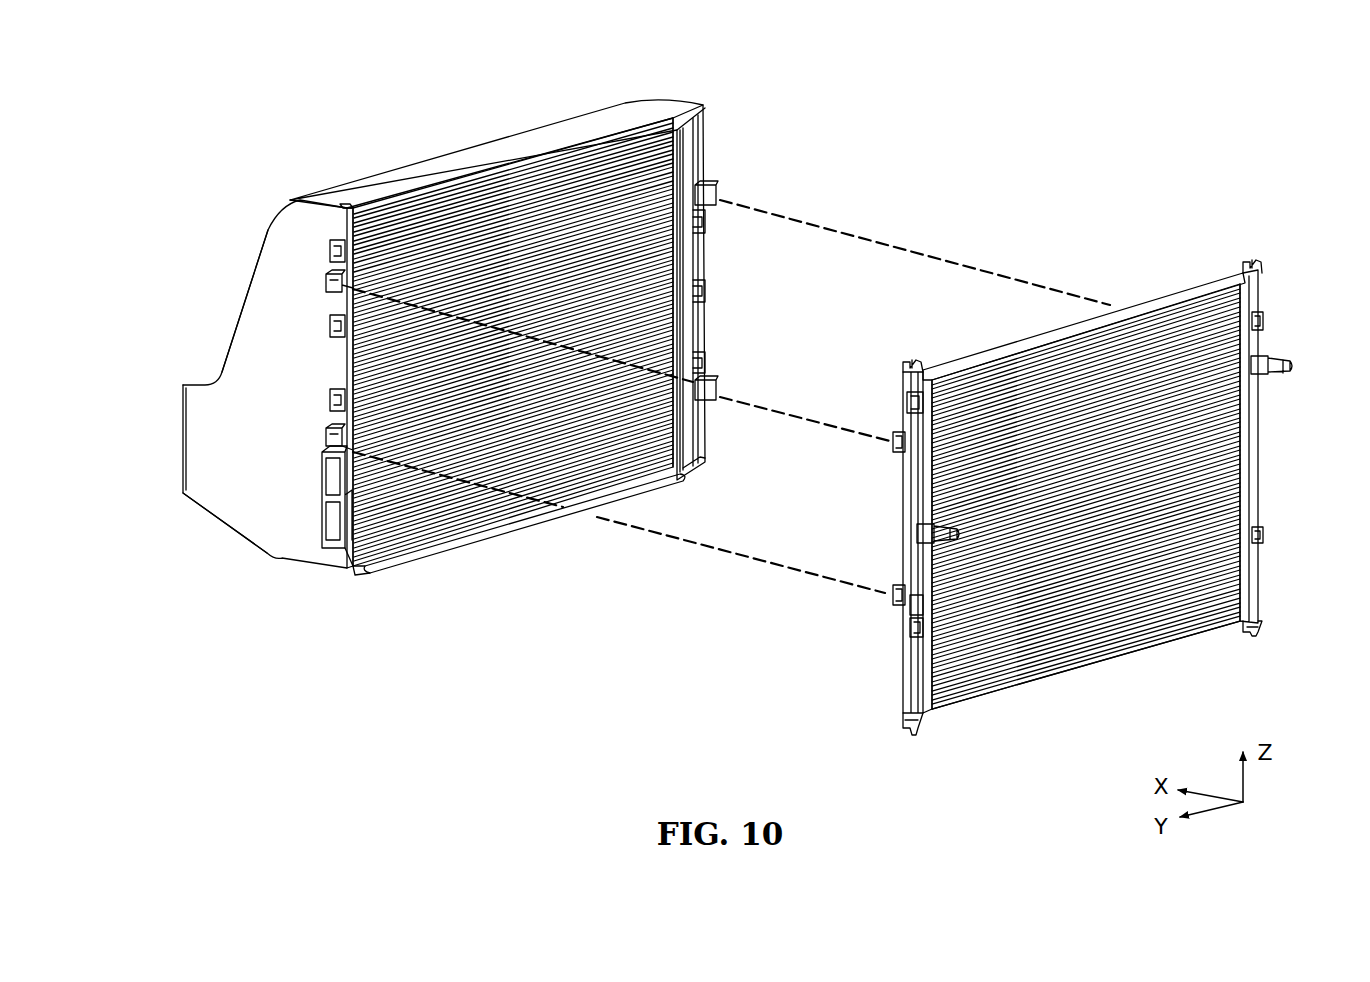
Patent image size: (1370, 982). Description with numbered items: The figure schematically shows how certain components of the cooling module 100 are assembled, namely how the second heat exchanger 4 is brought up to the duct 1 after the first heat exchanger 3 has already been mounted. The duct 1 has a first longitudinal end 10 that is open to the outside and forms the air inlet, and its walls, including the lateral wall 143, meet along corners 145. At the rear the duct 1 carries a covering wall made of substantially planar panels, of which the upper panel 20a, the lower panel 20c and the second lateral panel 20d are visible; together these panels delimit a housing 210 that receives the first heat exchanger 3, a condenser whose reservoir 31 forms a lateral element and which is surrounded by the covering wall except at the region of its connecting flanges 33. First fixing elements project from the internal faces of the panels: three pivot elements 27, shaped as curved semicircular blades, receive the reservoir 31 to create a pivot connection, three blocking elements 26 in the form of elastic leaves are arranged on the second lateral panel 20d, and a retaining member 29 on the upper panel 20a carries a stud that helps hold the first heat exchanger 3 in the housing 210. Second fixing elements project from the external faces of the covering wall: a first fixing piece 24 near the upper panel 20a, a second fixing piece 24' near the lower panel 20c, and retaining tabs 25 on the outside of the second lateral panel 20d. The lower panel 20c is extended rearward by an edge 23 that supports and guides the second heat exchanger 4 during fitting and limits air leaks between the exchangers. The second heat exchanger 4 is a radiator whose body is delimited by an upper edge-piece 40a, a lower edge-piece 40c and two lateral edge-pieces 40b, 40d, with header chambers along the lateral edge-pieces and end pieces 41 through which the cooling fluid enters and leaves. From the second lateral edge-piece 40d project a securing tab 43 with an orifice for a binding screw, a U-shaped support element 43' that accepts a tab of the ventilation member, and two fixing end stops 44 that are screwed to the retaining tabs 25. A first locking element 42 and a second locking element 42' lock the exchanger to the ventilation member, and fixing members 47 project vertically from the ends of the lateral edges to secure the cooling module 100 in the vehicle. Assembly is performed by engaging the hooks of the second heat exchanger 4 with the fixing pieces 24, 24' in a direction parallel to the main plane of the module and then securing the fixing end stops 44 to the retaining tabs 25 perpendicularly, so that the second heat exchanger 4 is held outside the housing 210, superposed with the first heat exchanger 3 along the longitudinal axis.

The duct 1 is at (514, 86).
The first heat exchanger 3 is at (586, 190).
The housing 210 is at (685, 125).
The upper panel 20a is at (466, 158).
The retaining member 29 is at (345, 205).
The blocking elements 26 is at (330, 246).
The retaining tabs 25 is at (318, 278).
The corners 145 is at (267, 228).
The first longitudinal end 10 is at (155, 427).
The lateral wall 143 is at (217, 470).
The second lateral panel 20d is at (334, 556).
The connecting flanges 33 is at (362, 535).
The edge 23 is at (475, 547).
The lower panel 20c is at (530, 520).
The reservoir 31 is at (702, 157).
The first fixing piece 24 is at (740, 190).
The pivot elements 27 is at (710, 217).
The second fixing piece 24' is at (745, 381).
The cooling module 100 is at (1147, 124).
The second heat exchanger 4 is at (1003, 645).
The upper edge-piece 40a is at (1194, 290).
The first lateral edge-piece 40b is at (1262, 469).
The lower edge-piece 40c is at (1108, 660).
The second lateral edge-piece 40d is at (902, 678).
The fixing members 47 is at (905, 368).
The first locking element 42 is at (1294, 311).
The second locking element 42' is at (1297, 528).
The end pieces 41 is at (1278, 355).
The securing tab 43 is at (873, 400).
The support element 43' is at (871, 629).
The fixing end stops 44 is at (896, 444).